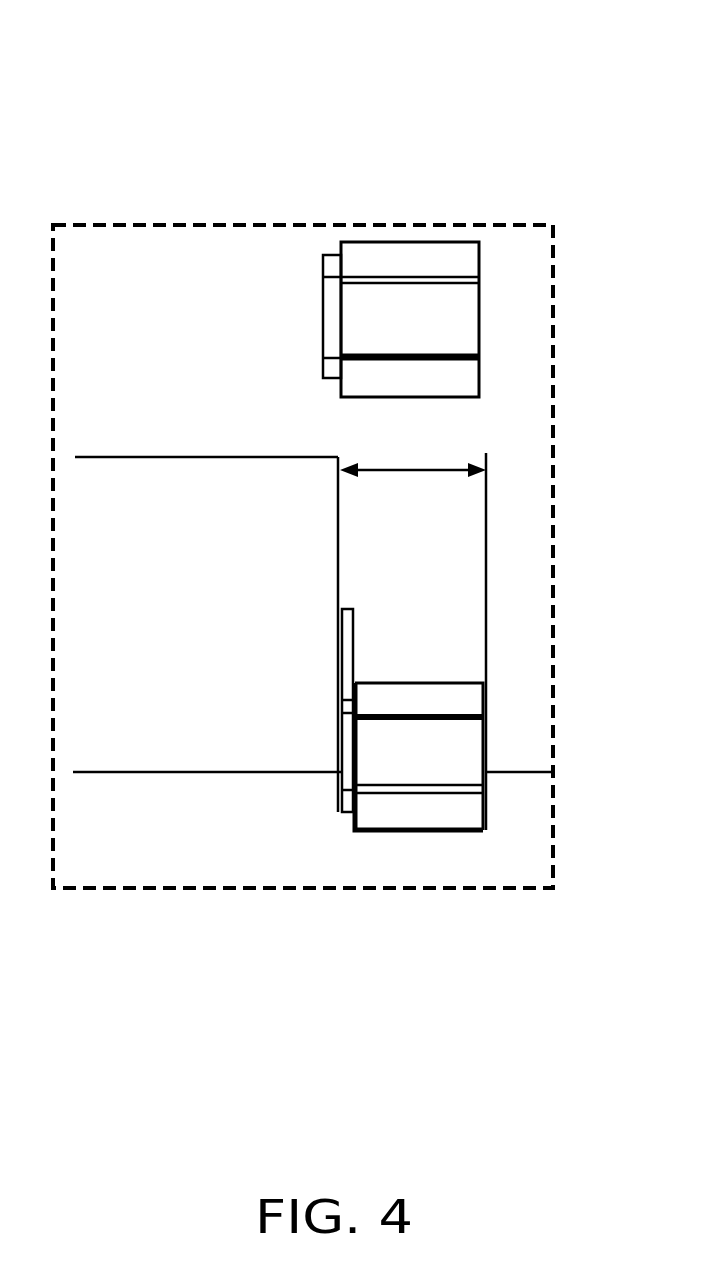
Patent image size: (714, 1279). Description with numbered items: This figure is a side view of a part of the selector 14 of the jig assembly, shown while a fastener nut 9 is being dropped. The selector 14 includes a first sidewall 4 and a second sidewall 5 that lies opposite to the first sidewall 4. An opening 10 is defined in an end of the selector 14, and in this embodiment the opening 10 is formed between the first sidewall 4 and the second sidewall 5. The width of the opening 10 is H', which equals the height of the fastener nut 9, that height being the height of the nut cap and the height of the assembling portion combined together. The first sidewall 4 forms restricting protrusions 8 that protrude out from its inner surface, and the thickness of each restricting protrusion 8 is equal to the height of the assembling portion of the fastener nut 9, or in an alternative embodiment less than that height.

The selector 14 is at (265, 76).
The first sidewall 4 is at (263, 490).
The second sidewall 5 is at (518, 622).
The restricting protrusion 8 is at (343, 655).
The fastener nut 9 is at (433, 302).
The opening 10 is at (448, 530).